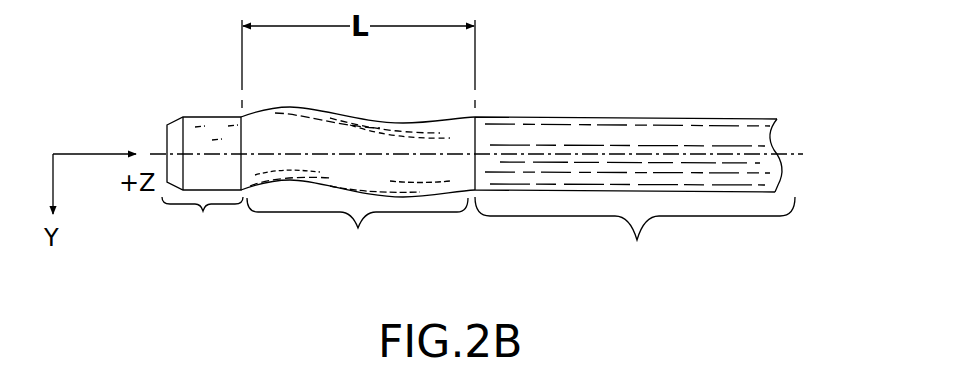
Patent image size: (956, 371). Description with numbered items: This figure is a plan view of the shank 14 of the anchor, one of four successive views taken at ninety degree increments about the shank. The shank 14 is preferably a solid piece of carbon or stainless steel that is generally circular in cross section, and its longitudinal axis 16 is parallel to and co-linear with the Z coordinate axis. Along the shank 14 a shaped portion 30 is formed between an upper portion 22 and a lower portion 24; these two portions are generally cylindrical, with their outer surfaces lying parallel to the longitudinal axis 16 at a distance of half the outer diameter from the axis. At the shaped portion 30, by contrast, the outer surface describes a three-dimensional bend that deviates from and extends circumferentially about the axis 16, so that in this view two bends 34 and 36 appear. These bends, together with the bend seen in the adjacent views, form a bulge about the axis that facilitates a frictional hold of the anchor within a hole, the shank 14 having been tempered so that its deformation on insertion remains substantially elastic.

The shank 14 is at (495, 151).
The longitudinal axis 16 is at (790, 165).
The upper portion 22 is at (635, 197).
The lower portion 24 is at (202, 183).
The shaped portion 30 is at (358, 163).
The bend 34 is at (324, 99).
The bend 36 is at (396, 208).